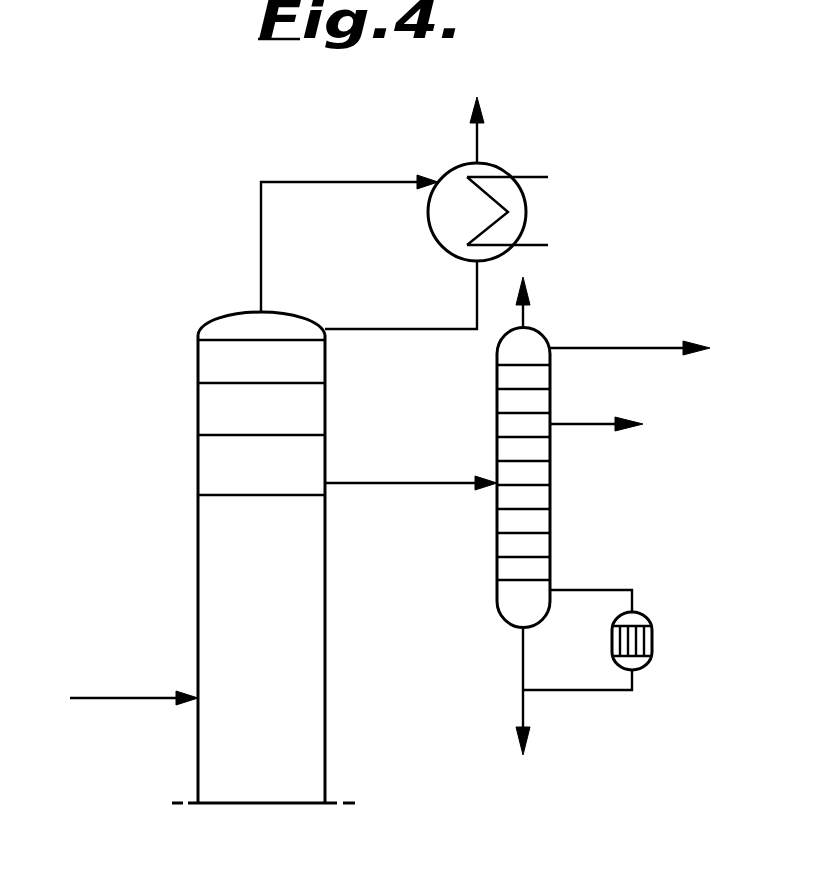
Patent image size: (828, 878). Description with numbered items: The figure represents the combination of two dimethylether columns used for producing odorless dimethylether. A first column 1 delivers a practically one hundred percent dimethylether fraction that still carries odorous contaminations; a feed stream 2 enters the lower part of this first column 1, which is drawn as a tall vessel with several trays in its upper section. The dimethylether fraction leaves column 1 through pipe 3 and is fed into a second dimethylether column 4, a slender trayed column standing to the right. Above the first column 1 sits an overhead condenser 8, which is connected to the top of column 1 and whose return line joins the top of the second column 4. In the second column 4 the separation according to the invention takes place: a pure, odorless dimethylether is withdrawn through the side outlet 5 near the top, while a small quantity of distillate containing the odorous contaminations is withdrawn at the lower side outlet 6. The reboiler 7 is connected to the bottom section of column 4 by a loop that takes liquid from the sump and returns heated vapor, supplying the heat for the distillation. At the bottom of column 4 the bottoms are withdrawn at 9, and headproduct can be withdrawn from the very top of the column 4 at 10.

The column 1 is at (262, 609).
The feed line 2 is at (134, 673).
The pipe 3 is at (411, 456).
The second dimethylether column 4 is at (523, 478).
The pure dimethylether withdrawal 5 is at (630, 324).
The distillate withdrawal 6 is at (596, 400).
The reboiler 7 is at (612, 640).
The condenser / heat exchanger 8 is at (415, 213).
The bottoms withdrawal 9 is at (548, 691).
The headproduct withdrawal 10 is at (560, 302).